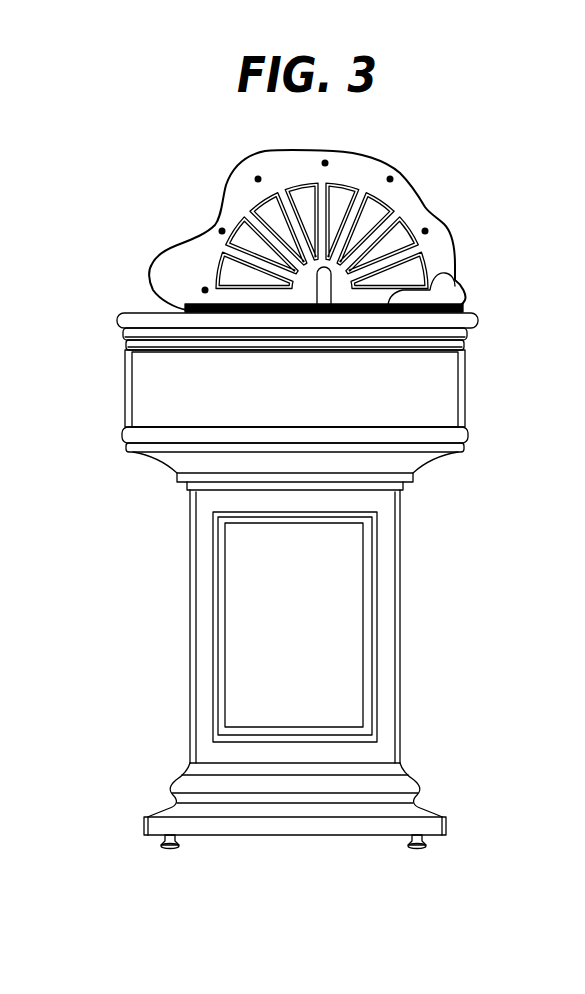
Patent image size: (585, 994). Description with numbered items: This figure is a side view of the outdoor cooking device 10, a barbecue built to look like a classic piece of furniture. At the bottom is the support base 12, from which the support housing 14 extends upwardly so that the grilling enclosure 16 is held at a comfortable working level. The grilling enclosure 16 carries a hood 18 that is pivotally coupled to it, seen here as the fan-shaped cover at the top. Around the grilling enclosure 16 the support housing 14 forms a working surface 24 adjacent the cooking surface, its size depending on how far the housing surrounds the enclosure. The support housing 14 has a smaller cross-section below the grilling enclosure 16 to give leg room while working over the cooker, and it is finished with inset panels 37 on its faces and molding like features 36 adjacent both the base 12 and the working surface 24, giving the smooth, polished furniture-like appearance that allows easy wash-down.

The outdoor cooking device 10 is at (503, 211).
The support base 12 is at (425, 845).
The support housing 14 is at (402, 577).
The grilling enclosure 16 is at (135, 300).
The hood 18 is at (213, 217).
The working surface 24 is at (137, 313).
The molding like features 36 is at (126, 338).
The inset panels 37 is at (343, 637).